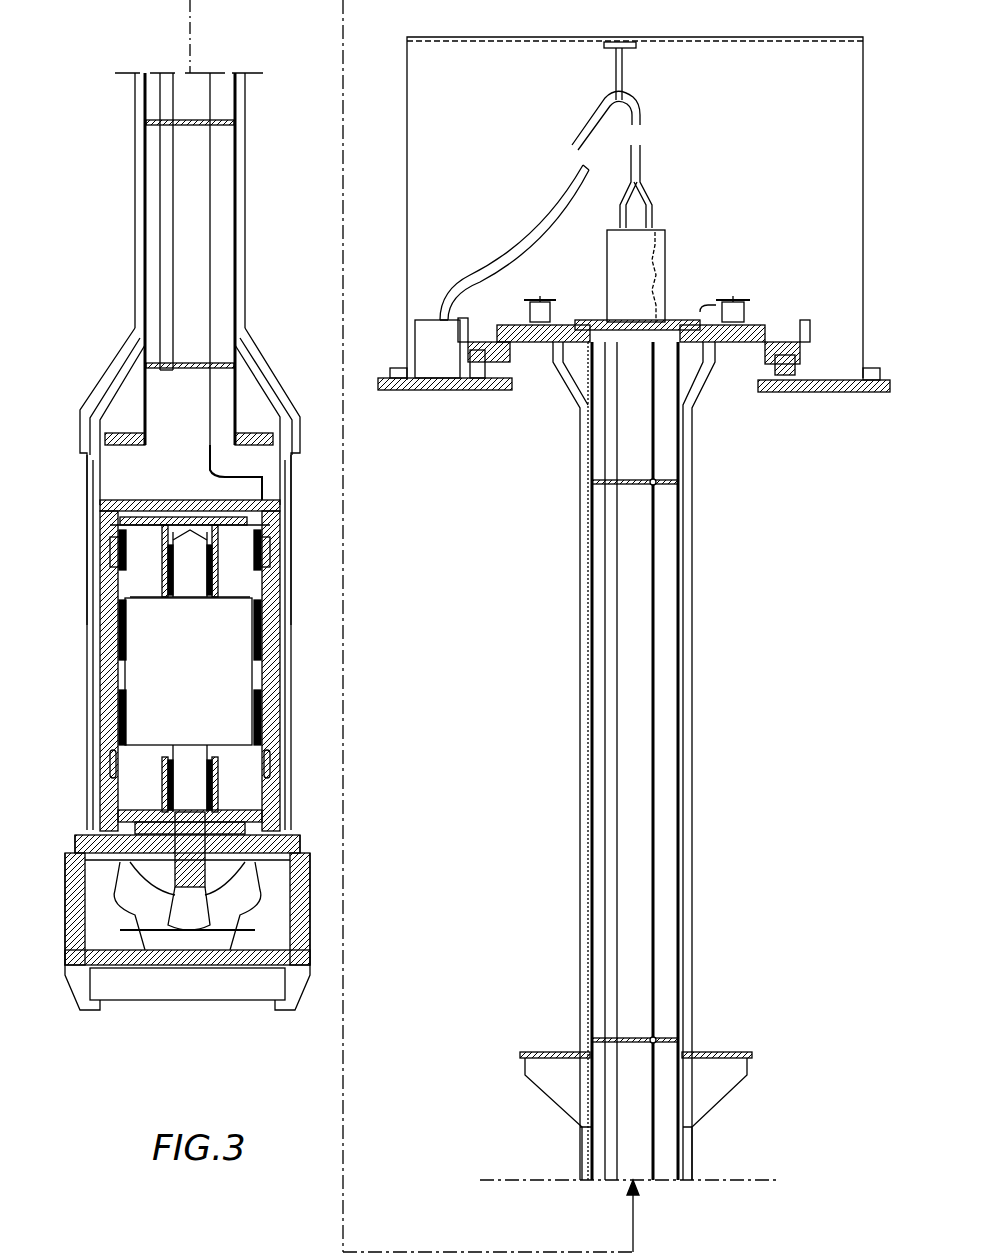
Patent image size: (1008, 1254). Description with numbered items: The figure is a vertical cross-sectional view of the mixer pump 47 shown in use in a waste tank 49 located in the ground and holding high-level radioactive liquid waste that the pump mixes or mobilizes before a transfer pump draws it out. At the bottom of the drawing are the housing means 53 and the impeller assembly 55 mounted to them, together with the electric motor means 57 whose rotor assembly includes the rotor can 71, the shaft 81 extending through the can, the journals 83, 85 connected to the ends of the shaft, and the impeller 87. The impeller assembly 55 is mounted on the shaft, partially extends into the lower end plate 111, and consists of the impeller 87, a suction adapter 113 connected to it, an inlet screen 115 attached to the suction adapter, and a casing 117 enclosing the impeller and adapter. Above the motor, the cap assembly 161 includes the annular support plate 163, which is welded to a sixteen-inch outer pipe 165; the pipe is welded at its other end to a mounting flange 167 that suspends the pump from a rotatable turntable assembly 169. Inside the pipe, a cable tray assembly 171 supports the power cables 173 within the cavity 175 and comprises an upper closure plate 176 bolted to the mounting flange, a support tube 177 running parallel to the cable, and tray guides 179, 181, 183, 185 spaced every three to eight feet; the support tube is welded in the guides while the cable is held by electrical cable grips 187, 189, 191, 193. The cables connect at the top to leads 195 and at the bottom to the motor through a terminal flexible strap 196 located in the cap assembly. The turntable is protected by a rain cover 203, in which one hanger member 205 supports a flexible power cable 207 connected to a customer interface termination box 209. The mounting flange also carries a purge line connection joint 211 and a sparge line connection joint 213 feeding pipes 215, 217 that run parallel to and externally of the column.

The mixer pump 47 is at (712, 853).
The waste tank 49 is at (886, 370).
The housing means 53 is at (78, 495).
The impeller assembly 55 is at (66, 1015).
The electric motor means 57 is at (83, 600).
The rotor can 71 is at (152, 662).
The shaft 81 is at (205, 745).
The journal 83 is at (192, 585).
The journal 85 is at (192, 775).
The impeller 87 is at (120, 905).
The lower end plate 111 is at (250, 812).
The suction adapter 113 is at (238, 985).
The inlet screen 115 is at (152, 1005).
The casing 117 is at (70, 870).
The cap assembly 161 is at (270, 428).
The annular support plate 163 is at (128, 430).
The outer pipe 165 is at (712, 355).
The mounting flange 167 is at (527, 320).
The turntable assembly 169 is at (765, 332).
The cable tray assembly 171 is at (660, 540).
The power cable 173 is at (680, 655).
The cavity 175 is at (680, 810).
The upper closure plate 176 is at (633, 320).
The support tube 177 is at (603, 615).
The tray guide 179 is at (598, 485).
The tray guide 181 is at (595, 1040).
The tray guide 183 is at (228, 120).
The tray guide 185 is at (215, 365).
The electrical cable grip 187 is at (656, 480).
The electrical cable grip 189 is at (660, 1040).
The electrical cable grip 191 is at (226, 125).
The electrical cable grip 193 is at (212, 360).
The leads 195 is at (670, 240).
The terminal flexible strap 196 is at (208, 460).
The rain cover 203 is at (785, 37).
The hanger member 205 is at (612, 62).
The flexible power cable 207 is at (555, 195).
The customer interface termination box 209 is at (410, 320).
The purge line connection joint 211 is at (538, 297).
The sparge line connection joint 213 is at (730, 296).
The feed pipe 215 is at (582, 472).
The feed pipe 217 is at (690, 590).